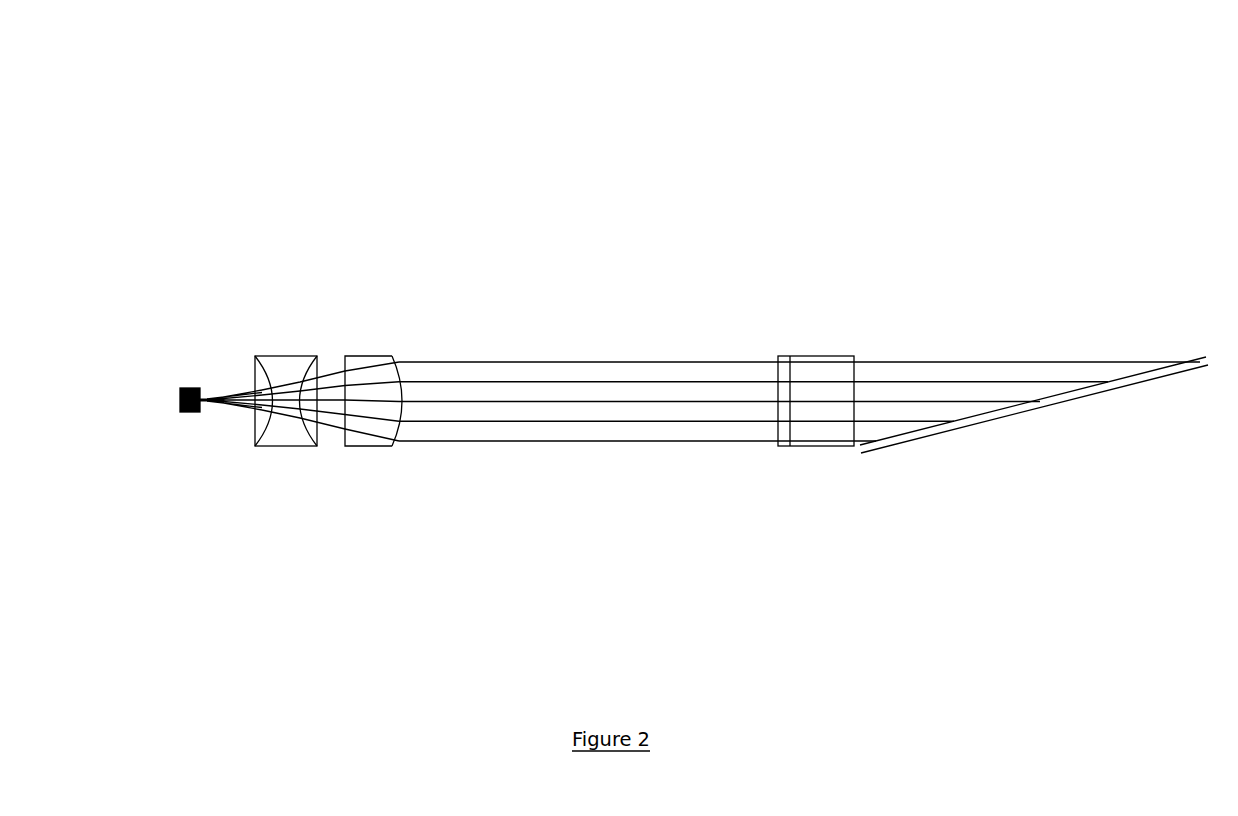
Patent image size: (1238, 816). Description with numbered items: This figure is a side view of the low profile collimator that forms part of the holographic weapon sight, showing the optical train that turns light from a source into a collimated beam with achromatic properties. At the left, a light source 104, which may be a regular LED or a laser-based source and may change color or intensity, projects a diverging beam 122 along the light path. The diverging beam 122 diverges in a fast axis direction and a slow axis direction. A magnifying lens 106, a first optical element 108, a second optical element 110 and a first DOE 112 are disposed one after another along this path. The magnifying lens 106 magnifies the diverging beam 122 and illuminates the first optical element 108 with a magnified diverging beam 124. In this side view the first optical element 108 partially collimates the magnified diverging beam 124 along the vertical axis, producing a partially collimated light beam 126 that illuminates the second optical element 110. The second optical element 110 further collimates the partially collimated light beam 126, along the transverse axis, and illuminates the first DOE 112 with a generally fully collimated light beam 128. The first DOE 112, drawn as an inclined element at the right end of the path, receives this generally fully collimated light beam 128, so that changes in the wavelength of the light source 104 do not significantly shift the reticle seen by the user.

The light source 104 is at (182, 425).
The magnifying lens 106 is at (283, 457).
The first optical element 108 is at (370, 477).
The second optical element 110 is at (815, 340).
The first DOE 112 is at (1037, 428).
The diverging beam 122 is at (228, 390).
The magnified diverging beam 124 is at (327, 348).
The partially collimated light beam 126 is at (557, 340).
The generally fully collimated light beam 128 is at (941, 340).